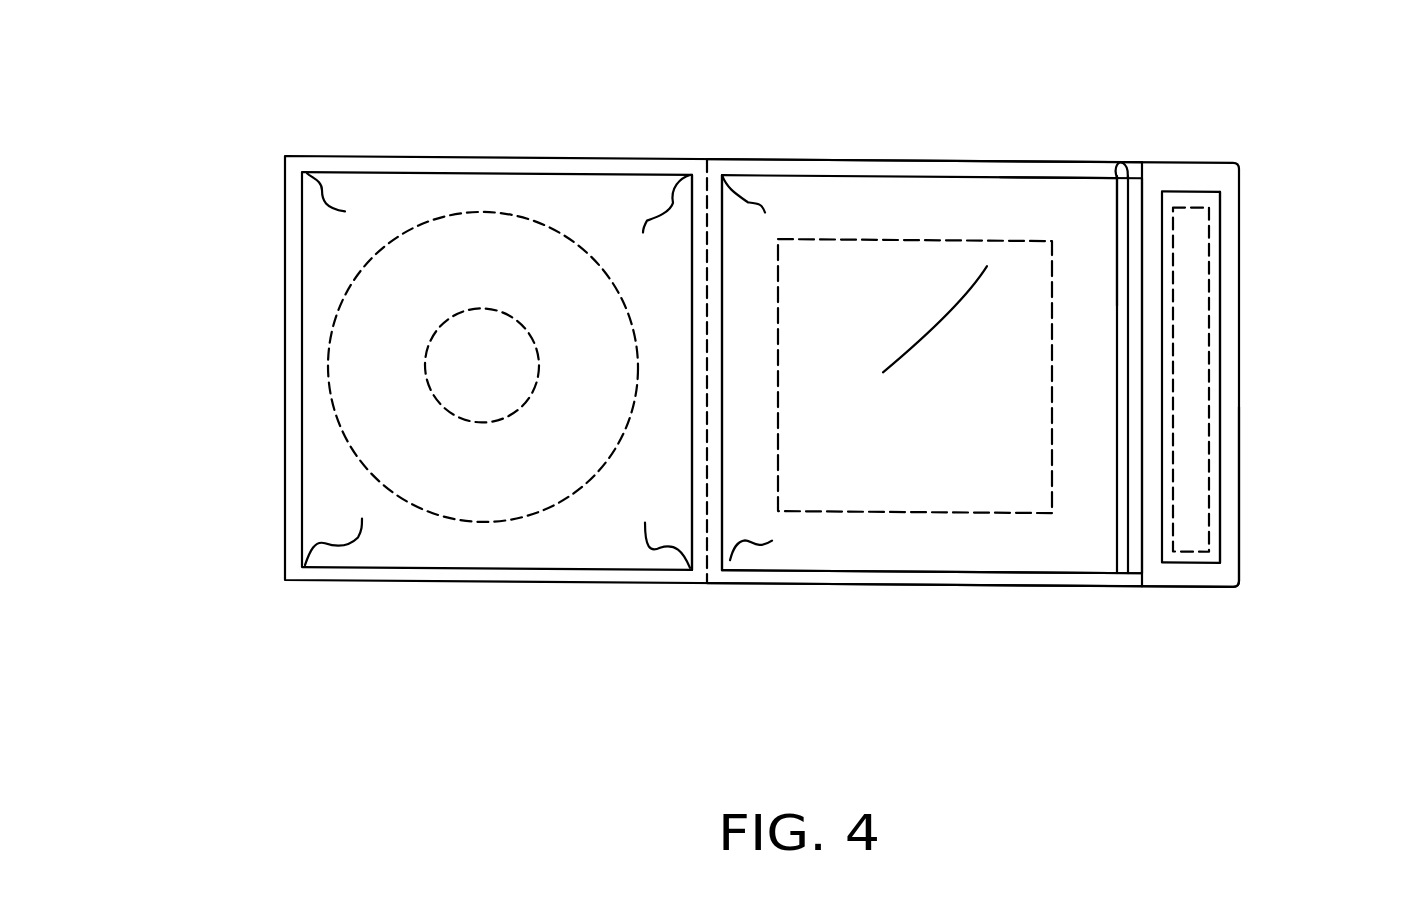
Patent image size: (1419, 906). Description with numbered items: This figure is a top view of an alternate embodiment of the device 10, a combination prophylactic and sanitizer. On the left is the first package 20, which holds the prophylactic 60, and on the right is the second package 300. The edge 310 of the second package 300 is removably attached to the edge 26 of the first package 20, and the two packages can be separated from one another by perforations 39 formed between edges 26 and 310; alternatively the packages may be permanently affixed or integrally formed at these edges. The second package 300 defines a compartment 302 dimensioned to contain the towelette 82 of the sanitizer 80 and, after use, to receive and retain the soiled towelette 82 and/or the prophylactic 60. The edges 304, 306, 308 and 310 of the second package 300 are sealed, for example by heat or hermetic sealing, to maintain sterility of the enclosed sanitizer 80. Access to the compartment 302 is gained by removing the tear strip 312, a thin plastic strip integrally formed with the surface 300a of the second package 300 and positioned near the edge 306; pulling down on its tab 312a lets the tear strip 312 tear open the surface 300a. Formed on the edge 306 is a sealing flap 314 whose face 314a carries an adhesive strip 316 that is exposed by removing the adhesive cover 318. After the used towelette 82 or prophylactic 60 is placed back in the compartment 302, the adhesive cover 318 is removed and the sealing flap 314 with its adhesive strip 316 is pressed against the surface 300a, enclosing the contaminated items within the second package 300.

The device 10 is at (247, 203).
The first package 20 is at (392, 188).
The edge 26 is at (698, 262).
The perforations 39 is at (700, 176).
The prophylactic 60 is at (488, 490).
The sanitizer 80 is at (843, 483).
The towelette 82 is at (918, 275).
The second package 300 is at (830, 202).
The surface 300a is at (1015, 200).
The compartment 302 is at (1030, 552).
The edge 304 is at (758, 166).
The edge 306 is at (1145, 195).
The edge 308 is at (942, 578).
The edge 310 is at (720, 492).
The tear strip 312 is at (1120, 562).
The tab 312a is at (1122, 165).
The sealing flap 314 is at (1223, 180).
The face 314a is at (1227, 575).
The adhesive strip 316 is at (1193, 283).
The adhesive cover 318 is at (1213, 326).